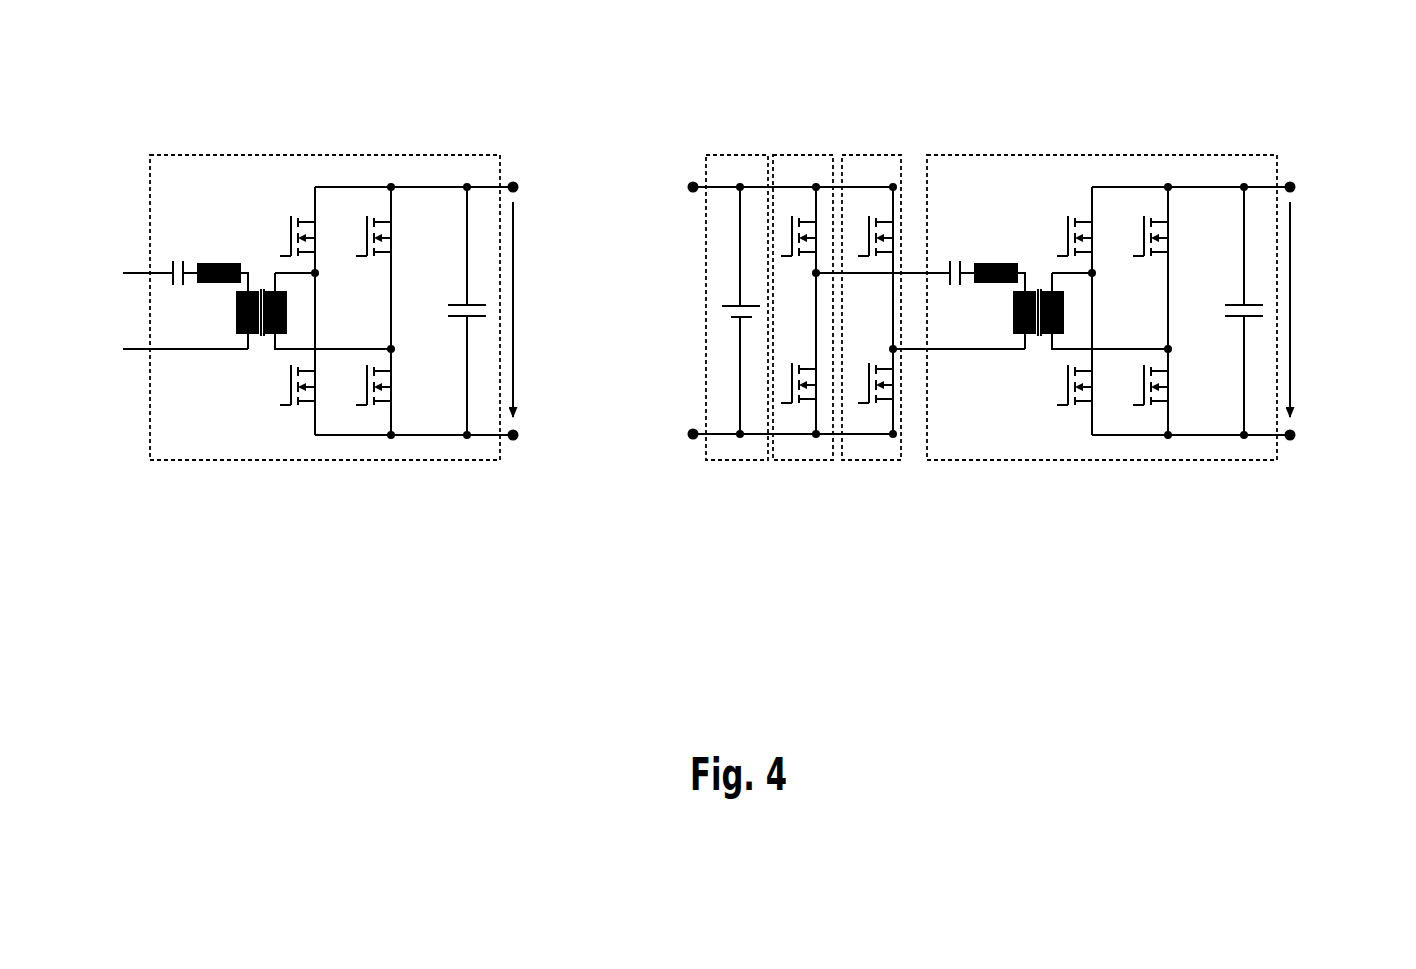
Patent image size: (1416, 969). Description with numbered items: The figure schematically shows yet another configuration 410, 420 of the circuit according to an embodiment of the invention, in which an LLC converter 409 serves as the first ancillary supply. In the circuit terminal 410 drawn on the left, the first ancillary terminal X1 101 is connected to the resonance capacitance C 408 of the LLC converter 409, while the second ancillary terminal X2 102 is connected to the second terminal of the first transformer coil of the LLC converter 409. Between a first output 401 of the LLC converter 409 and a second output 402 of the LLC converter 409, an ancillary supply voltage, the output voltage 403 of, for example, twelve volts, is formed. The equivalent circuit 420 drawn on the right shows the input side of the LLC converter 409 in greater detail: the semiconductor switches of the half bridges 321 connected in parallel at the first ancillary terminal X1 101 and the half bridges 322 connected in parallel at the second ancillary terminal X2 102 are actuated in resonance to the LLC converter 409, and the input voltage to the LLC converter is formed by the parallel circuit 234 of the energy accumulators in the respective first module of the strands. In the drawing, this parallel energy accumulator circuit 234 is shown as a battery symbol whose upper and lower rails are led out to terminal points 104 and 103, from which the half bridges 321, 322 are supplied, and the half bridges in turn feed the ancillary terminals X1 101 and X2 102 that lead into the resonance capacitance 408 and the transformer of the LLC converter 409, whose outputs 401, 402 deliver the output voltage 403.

The first ancillary terminal X1 101 is at (128, 266).
The second ancillary terminal X2 102 is at (129, 354).
The negative battery terminal 103 is at (688, 434).
The positive battery terminal 104 is at (688, 188).
The parallel circuit of energy accumulator 234 is at (736, 151).
The parallel circuit of the half bridges with the first ancillary terminal X1 321 is at (804, 151).
The parallel circuit of the half bridges with second ancillary terminal X2 322 is at (872, 151).
The first output of LLC converter 401 is at (522, 187).
The second output of LLC converter 402 is at (522, 435).
The output voltage of LLC converter 403 is at (518, 312).
The capacitor 408 is at (180, 250).
The LLC converter 409 is at (238, 464).
The circuit terminal of LLC converter 410 is at (122, 116).
The equivalent circuit of LLC converter 420 is at (1233, 120).